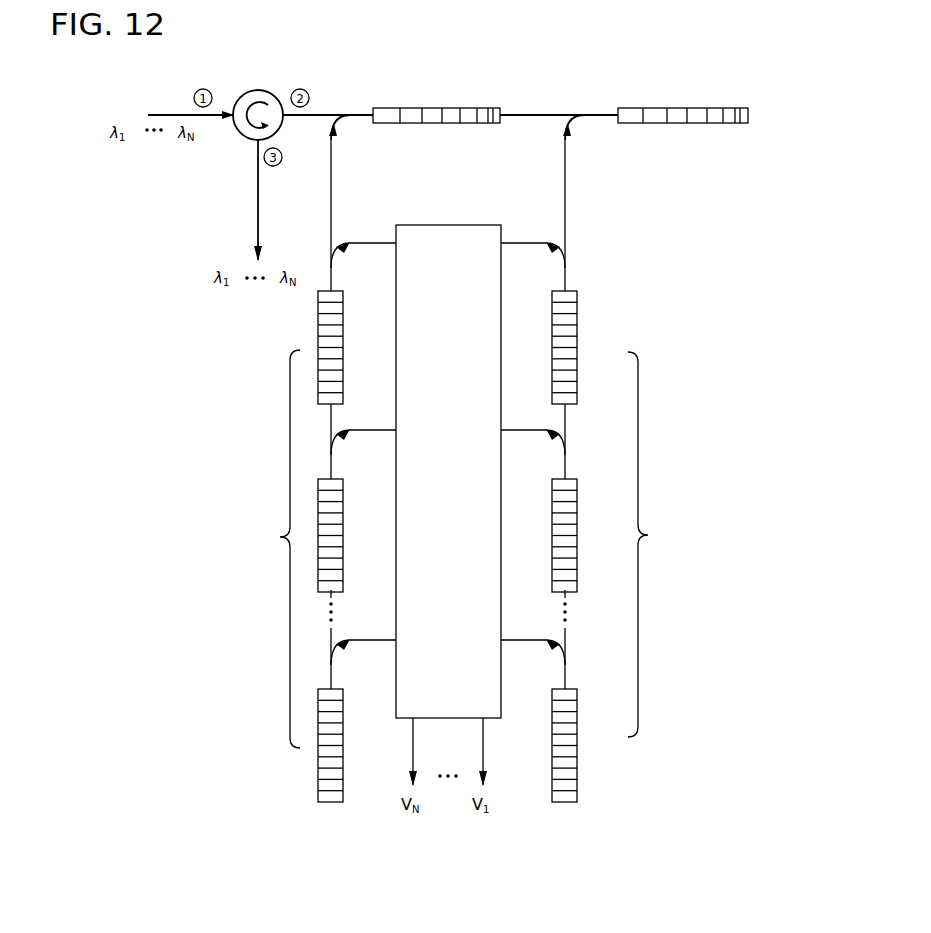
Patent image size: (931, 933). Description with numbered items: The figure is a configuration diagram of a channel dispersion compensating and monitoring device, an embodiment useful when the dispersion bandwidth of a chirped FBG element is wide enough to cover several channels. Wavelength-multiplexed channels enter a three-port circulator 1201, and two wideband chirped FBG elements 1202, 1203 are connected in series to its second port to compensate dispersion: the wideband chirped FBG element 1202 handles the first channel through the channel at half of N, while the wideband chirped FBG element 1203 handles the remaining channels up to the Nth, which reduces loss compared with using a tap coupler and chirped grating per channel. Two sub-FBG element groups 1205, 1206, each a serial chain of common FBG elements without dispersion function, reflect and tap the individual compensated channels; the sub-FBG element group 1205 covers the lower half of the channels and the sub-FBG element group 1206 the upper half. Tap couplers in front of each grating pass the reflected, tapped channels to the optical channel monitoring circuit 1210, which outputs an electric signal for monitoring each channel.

The circulator 1201 is at (267, 92).
The wideband chirped FBG element 1202 is at (681, 108).
The wideband chirped FBG element 1203 is at (470, 108).
The sub-FBG element group 1205 is at (627, 546).
The sub-FBG element group 1206 is at (314, 546).
The optical channel monitoring circuit 1210 is at (443, 225).